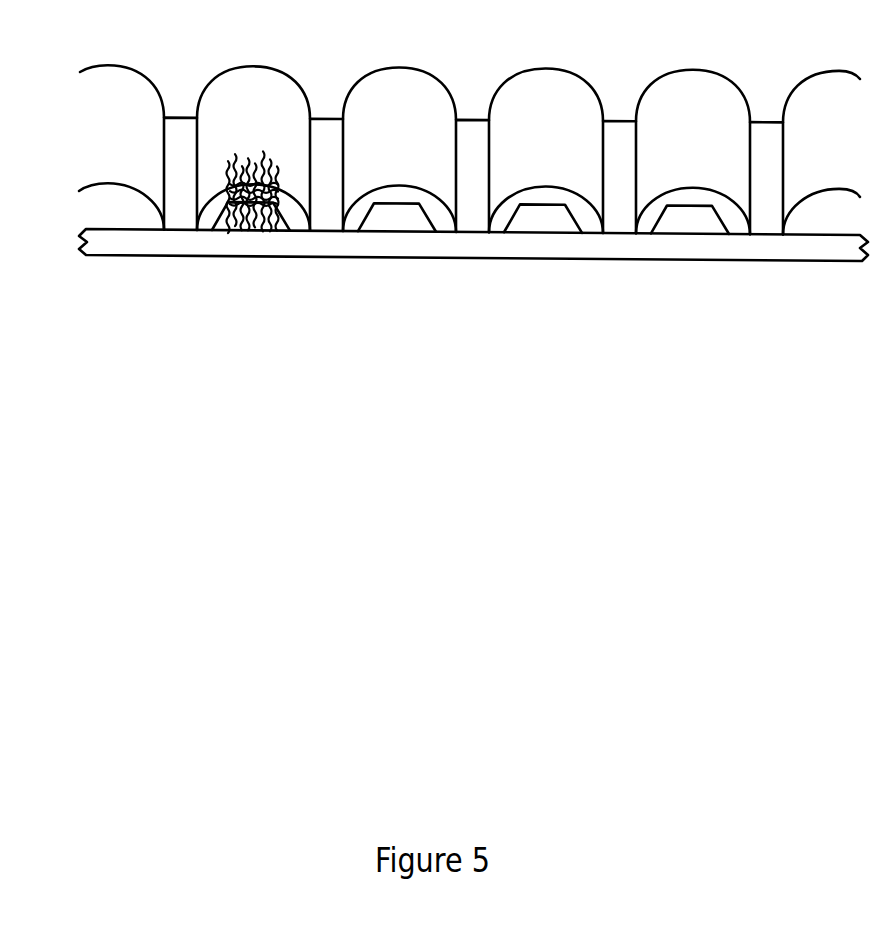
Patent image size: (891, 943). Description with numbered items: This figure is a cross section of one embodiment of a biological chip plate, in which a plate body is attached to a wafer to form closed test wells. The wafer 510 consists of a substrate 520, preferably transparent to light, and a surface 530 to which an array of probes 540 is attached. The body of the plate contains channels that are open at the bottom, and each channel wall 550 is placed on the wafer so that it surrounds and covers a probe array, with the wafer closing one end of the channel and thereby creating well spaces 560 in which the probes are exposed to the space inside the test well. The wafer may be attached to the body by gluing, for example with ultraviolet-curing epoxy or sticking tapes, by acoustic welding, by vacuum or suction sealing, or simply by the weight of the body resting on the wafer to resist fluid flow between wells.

The wafer 510 is at (463, 262).
The substrate 520 is at (159, 245).
The surface 530 is at (292, 230).
The array of probes 540 is at (248, 230).
The channel wall 550 is at (179, 112).
The well spaces 560 is at (278, 85).